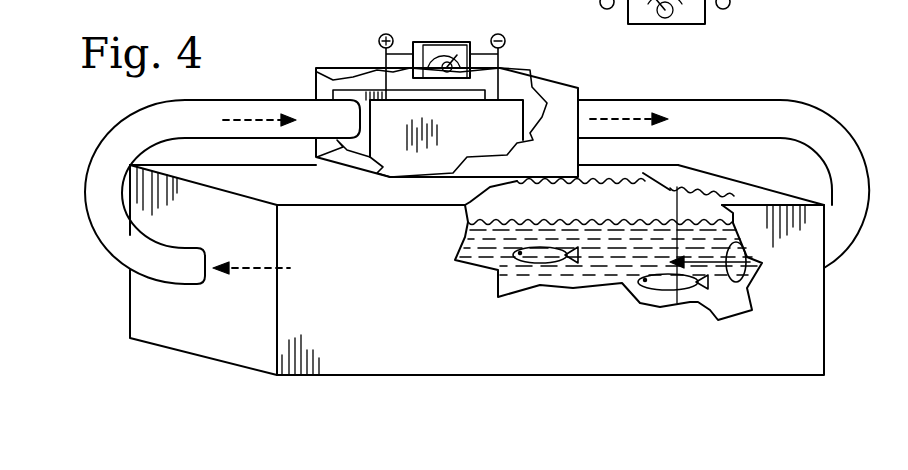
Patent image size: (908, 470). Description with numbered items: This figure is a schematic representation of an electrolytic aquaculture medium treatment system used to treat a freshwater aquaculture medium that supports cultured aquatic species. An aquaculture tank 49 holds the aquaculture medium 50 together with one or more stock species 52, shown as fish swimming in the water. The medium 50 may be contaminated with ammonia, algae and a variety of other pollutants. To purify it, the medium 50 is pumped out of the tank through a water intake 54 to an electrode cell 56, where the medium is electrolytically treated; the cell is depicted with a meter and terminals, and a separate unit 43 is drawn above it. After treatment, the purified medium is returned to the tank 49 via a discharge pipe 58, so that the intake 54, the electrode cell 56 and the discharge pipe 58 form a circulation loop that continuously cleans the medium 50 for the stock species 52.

The control unit / power supply 43 is at (705, 13).
The aquaculture tank 49 is at (405, 358).
The aquaculture medium 50 is at (580, 275).
The stock species 52 is at (548, 250).
The water intake 54 is at (185, 285).
The electrode cell 56 is at (548, 66).
The discharge pipe 58 is at (827, 266).